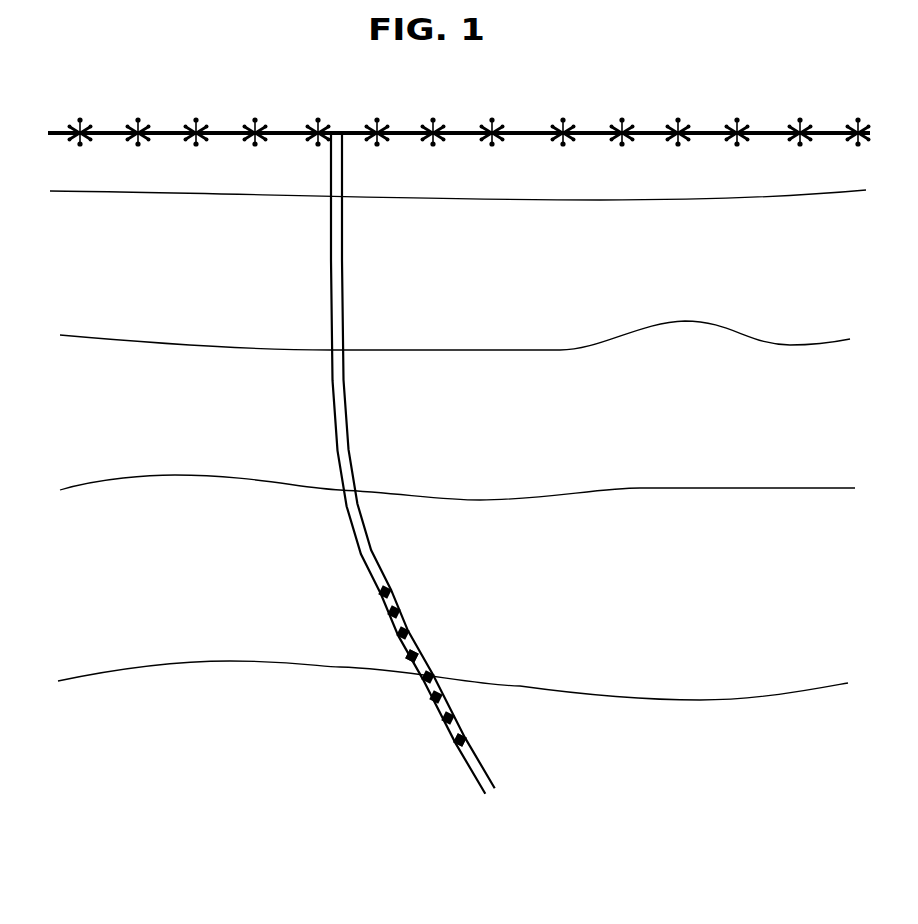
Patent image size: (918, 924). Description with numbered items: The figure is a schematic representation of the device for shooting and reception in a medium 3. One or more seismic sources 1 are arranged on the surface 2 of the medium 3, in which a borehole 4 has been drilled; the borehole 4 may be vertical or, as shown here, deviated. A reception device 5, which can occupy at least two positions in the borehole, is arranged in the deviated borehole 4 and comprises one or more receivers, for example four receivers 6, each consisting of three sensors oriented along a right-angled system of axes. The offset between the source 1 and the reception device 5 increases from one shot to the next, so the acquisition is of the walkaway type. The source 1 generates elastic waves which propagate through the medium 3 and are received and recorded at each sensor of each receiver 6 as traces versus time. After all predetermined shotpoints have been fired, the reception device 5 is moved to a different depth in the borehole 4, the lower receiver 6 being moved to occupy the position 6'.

The seismic source 1 is at (139, 140).
The surface 2 is at (463, 135).
The medium 3 is at (131, 404).
The borehole 4 is at (343, 322).
The reception device 5 is at (432, 704).
The receiver 6 is at (428, 760).
The position of the lower receiver 6' is at (442, 633).